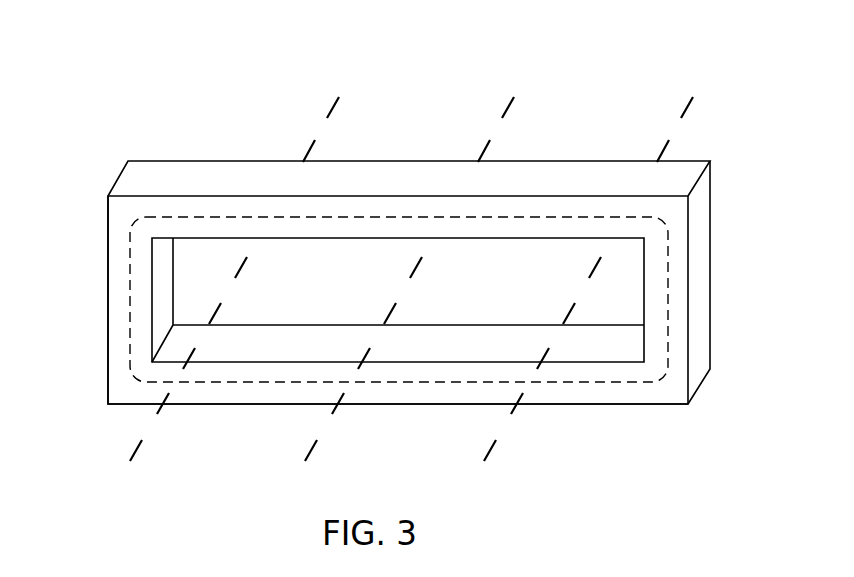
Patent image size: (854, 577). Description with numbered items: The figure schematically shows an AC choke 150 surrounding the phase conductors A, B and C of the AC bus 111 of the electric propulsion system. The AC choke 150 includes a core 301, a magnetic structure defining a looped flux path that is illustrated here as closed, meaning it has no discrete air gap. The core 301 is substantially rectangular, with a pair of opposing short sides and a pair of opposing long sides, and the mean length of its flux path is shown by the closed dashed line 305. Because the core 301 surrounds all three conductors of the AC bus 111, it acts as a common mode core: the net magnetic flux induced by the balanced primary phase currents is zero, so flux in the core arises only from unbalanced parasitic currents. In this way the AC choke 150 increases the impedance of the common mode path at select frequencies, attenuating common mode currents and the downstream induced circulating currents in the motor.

The AC choke 150 is at (228, 132).
The core 301 is at (108, 213).
The closed dashed line 305 is at (130, 304).
The AC bus 111 is at (698, 87).